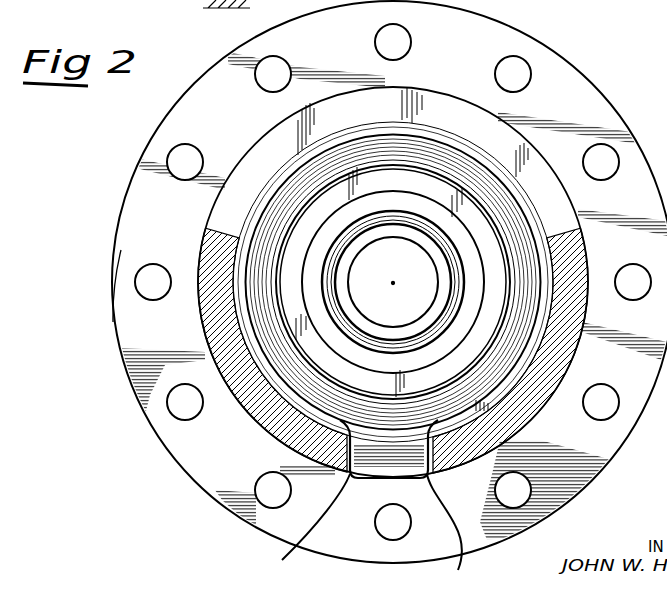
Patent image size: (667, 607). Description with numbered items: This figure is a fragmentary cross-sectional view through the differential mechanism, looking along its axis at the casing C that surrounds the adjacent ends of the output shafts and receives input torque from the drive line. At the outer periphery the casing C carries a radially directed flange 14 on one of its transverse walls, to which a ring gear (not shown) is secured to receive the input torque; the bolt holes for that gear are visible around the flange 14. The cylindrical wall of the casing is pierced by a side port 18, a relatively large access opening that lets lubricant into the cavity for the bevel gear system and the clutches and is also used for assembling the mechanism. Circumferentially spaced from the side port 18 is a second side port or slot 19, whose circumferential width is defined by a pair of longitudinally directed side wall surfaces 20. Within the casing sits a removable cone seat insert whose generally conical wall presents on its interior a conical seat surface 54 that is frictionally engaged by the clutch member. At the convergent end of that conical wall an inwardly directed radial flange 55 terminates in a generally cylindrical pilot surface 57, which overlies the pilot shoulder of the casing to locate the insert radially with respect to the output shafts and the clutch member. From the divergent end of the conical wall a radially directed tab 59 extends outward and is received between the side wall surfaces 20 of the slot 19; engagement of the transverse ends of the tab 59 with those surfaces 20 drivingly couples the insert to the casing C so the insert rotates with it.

The radially directed flange 14 is at (611, 118).
The side port 18 is at (221, 231).
The second side port 19 is at (368, 489).
The longitudinally directed side wall surfaces 20 is at (446, 534).
The conical seat surface 54 is at (194, 481).
The inwardly directed radial flange 55 is at (341, 372).
The cylindrical pilot surface 57 is at (316, 239).
The radially directed tab 59 is at (294, 551).
The casing c is at (113, 323).